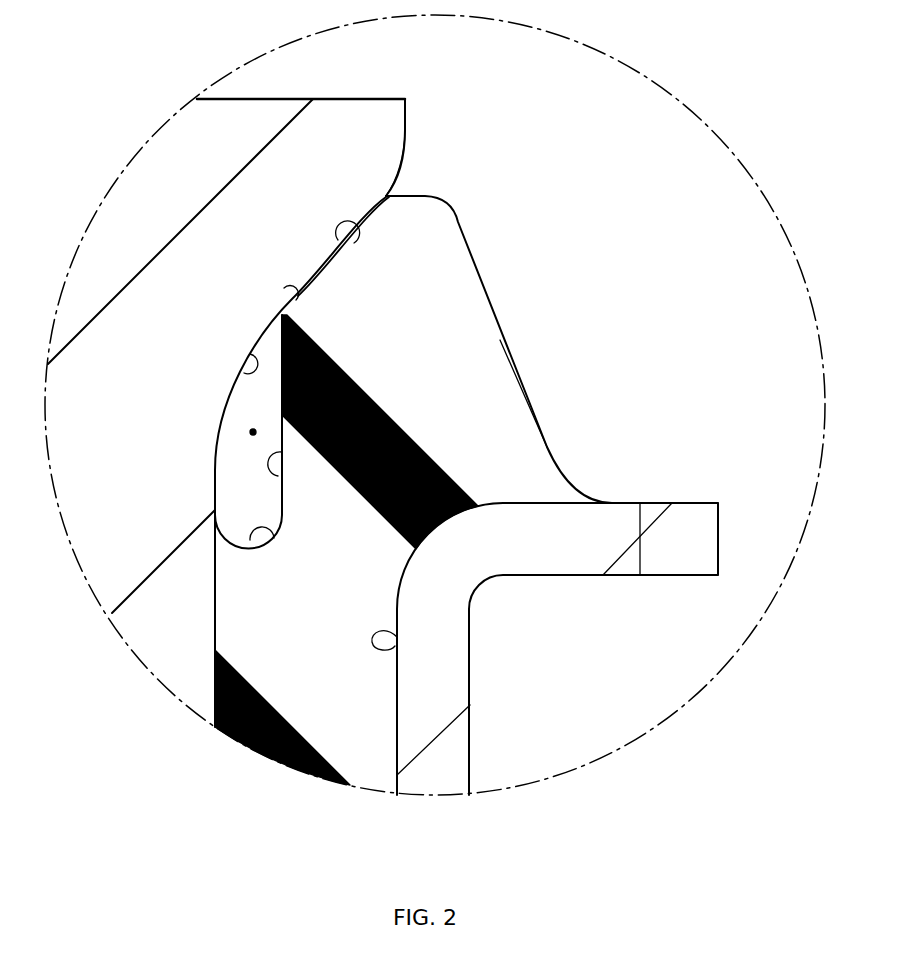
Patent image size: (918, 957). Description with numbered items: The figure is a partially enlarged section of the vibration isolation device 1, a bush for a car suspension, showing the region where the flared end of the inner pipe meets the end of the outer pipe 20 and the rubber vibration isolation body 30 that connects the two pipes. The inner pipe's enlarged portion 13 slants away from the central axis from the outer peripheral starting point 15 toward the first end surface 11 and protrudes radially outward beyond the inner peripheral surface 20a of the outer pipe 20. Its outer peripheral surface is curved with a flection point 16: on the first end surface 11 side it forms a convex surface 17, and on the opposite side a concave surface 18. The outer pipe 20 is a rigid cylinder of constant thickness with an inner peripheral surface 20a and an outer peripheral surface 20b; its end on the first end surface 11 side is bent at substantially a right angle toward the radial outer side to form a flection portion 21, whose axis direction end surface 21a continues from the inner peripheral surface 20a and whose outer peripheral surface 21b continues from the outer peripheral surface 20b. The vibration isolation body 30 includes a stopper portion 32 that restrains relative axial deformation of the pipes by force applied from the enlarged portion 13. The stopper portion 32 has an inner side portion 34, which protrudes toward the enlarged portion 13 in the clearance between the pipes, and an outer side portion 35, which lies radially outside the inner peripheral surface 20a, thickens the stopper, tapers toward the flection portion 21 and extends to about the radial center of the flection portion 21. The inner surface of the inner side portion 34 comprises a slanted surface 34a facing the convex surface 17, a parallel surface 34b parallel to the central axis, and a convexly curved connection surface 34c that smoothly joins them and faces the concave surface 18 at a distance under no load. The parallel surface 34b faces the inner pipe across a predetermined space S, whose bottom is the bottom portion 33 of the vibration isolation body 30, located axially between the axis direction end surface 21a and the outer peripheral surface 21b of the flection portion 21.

The vibration isolation device 1 is at (511, 133).
The first end surface 11 is at (370, 99).
The enlarged portion 13 is at (253, 120).
The outer peripheral starting point 15 is at (215, 472).
The flection point 16 is at (310, 282).
The convex surface 17 is at (405, 130).
The concave surface 18 is at (242, 372).
The outer pipe 20 is at (452, 755).
The inner peripheral surface 20a is at (397, 637).
The outer peripheral surface 20b is at (475, 728).
The flection portion 21 is at (648, 555).
The axis direction end surface 21a is at (690, 503).
The outer peripheral surface 21b is at (686, 575).
The vibration isolation body 30 is at (388, 690).
The stopper portion 32 is at (538, 281).
The bottom portion 33 is at (280, 548).
The inner side portion 34 is at (297, 509).
The slanted surface 34a is at (352, 250).
The parallel surface 34b is at (283, 488).
The connection surface 34c is at (312, 297).
The outer side portion 35 is at (480, 378).
The space S is at (250, 432).